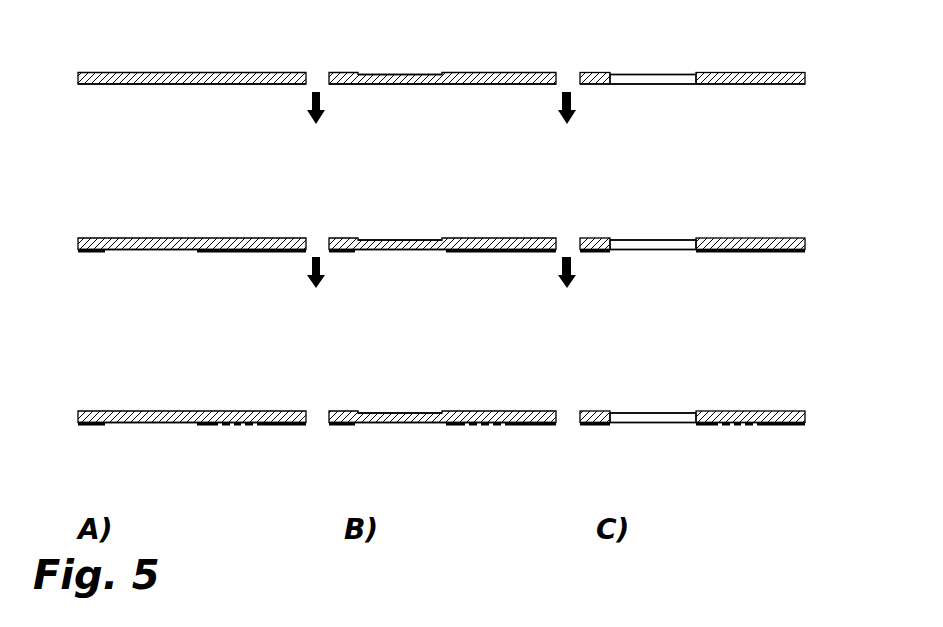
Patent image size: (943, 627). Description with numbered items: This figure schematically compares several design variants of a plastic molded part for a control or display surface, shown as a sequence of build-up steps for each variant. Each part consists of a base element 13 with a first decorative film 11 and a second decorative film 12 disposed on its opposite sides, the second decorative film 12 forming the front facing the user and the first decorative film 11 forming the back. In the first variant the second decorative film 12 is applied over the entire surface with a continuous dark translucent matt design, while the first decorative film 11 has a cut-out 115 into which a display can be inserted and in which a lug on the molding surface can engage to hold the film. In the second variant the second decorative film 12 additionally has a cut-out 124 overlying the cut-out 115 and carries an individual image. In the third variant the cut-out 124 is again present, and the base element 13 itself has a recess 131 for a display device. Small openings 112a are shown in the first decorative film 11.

The second decorative film 12 is at (136, 72).
The base element 13 is at (90, 84).
The cut-out 124 is at (390, 63).
The recess 131 is at (637, 79).
The first decorative film 11 is at (100, 253).
The cut-out 115 is at (157, 263).
The openings in metal layer 112a is at (220, 426).